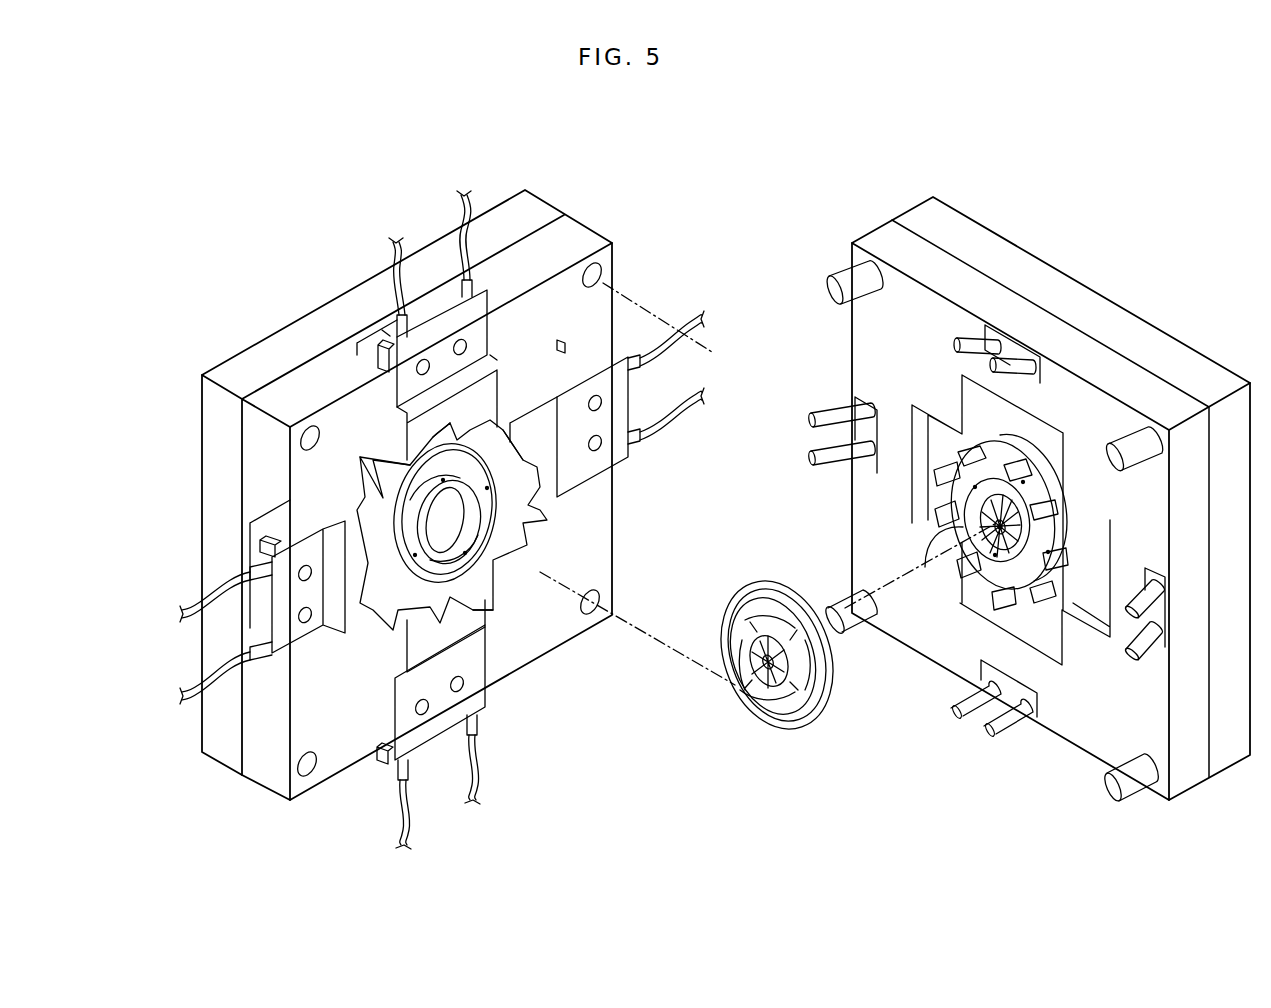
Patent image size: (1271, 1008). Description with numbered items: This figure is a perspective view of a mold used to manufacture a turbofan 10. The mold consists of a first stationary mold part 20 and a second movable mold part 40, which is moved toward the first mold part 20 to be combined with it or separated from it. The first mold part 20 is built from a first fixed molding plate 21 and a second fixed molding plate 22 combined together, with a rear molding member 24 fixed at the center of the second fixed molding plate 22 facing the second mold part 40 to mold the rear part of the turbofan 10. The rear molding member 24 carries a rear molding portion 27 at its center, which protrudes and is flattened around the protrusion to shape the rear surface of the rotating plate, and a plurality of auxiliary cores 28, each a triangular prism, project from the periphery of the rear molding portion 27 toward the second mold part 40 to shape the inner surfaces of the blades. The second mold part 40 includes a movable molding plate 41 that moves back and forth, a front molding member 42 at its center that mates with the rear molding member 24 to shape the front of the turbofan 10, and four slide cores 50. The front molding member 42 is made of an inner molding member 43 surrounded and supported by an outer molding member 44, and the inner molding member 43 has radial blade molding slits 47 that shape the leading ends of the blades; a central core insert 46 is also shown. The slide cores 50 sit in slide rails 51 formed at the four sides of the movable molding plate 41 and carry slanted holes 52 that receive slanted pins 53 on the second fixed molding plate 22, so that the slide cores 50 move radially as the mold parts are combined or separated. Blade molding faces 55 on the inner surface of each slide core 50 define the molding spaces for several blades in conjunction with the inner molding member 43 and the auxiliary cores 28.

The turbofan 10 is at (790, 728).
The first stationary mold part 20 is at (1025, 455).
The first fixed molding plate 21 is at (1183, 348).
The second fixed molding plate 22 is at (1097, 350).
The rear molding member 24 is at (1072, 520).
The rear molding portion 27 is at (960, 605).
The auxiliary cores 28 is at (990, 540).
The second movable mold part 40 is at (430, 490).
The movable molding plate 41 is at (578, 232).
The front molding member 42 is at (533, 533).
The inner molding member 43 is at (523, 412).
The outer molding member 44 is at (457, 430).
The core insert 46 is at (497, 532).
The blade molding slits 47 is at (487, 495).
The slide cores 50 is at (436, 333).
The slide rails 51 is at (377, 362).
The slanted holes 52 is at (463, 345).
The slanted pins 53 is at (953, 347).
The blade molding faces 55 is at (385, 463).